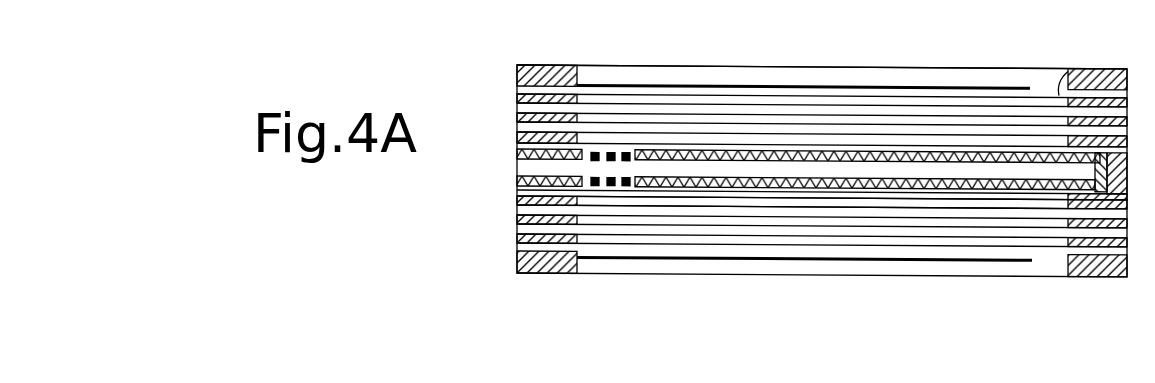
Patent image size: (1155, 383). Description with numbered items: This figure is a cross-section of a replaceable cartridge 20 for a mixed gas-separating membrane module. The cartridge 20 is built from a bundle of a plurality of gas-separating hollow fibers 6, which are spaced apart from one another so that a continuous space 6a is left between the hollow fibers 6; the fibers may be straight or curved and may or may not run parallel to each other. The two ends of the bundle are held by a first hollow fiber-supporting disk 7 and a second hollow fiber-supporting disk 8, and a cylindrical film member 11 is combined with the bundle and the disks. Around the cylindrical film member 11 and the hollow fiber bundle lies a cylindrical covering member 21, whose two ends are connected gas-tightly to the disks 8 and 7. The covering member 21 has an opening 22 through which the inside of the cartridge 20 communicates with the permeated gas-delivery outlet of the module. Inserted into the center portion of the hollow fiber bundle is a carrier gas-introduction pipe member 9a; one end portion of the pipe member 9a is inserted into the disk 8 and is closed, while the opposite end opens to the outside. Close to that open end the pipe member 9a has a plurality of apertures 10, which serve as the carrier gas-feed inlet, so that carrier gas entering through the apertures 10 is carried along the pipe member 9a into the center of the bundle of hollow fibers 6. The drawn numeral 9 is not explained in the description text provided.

The gas-separating hollow fibers 6 is at (1067, 68).
The continuous space 6a is at (913, 205).
The first hollow fiber-supporting disk 7 is at (540, 274).
The second hollow fiber-supporting disk 8 is at (1098, 276).
The internal electrode layer 9 is at (517, 157).
The carrier gas-introduction pipe member 9a is at (958, 187).
The apertures 10 is at (779, 247).
The cylindrical film member 11 is at (988, 85).
The replaceable cartridge 20 is at (909, 57).
The cylindrical covering member 21 is at (760, 66).
The opening 22 is at (1046, 68).